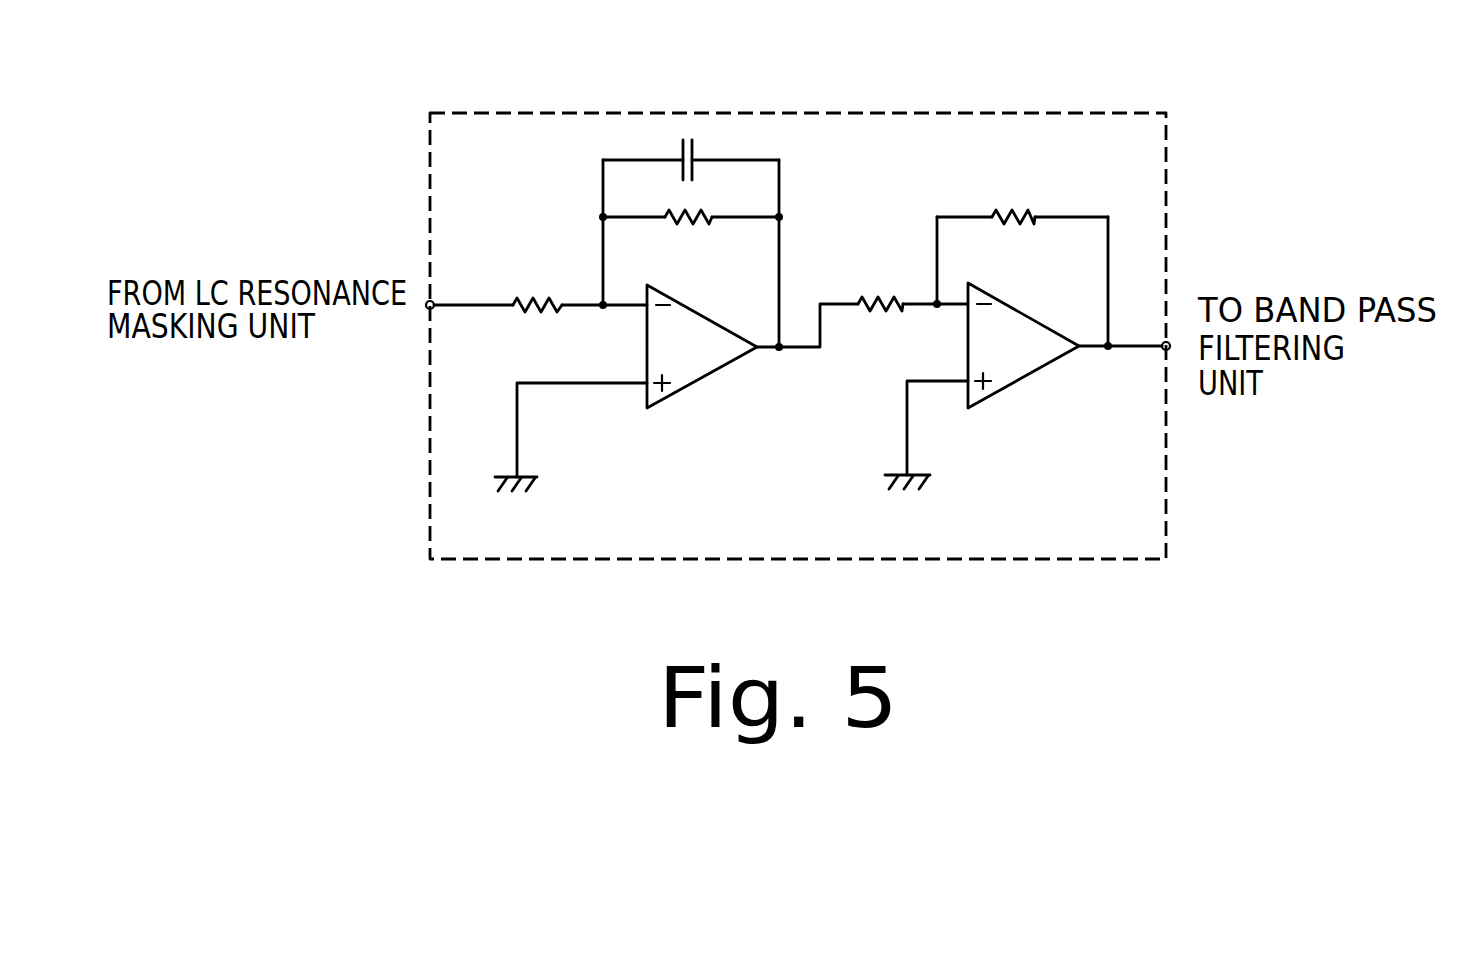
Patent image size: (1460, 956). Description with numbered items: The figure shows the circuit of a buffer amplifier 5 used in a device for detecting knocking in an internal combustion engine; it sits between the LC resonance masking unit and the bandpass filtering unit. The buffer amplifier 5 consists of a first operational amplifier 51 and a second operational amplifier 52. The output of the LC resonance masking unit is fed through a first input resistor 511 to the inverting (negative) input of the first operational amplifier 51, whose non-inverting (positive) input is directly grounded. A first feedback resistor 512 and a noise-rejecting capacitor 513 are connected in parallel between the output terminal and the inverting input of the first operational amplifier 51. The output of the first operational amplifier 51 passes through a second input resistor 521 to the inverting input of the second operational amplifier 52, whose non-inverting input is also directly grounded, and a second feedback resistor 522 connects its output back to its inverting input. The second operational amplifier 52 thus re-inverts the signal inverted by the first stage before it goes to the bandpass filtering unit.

The buffer amplifier 5 is at (868, 112).
The first operational amplifier 51 is at (690, 385).
The first input resistor 511 is at (538, 297).
The first feedback resistor 512 is at (697, 228).
The capacitor 513 is at (698, 150).
The second operational amplifier 52 is at (1015, 383).
The second input resistor 521 is at (883, 312).
The second feedback resistor 522 is at (1017, 208).